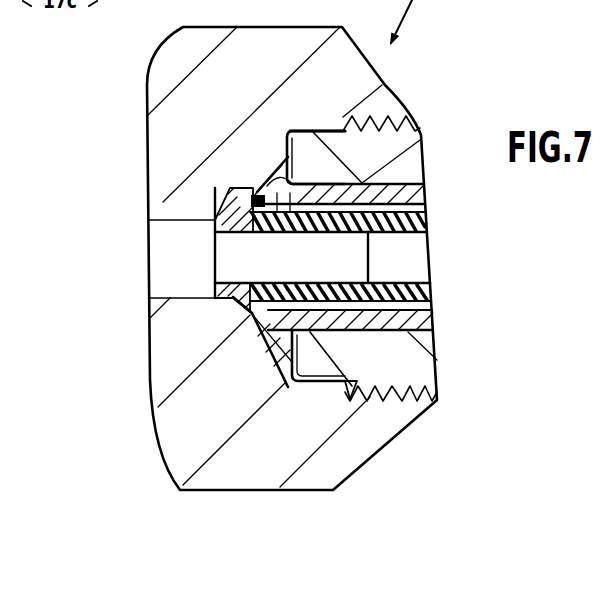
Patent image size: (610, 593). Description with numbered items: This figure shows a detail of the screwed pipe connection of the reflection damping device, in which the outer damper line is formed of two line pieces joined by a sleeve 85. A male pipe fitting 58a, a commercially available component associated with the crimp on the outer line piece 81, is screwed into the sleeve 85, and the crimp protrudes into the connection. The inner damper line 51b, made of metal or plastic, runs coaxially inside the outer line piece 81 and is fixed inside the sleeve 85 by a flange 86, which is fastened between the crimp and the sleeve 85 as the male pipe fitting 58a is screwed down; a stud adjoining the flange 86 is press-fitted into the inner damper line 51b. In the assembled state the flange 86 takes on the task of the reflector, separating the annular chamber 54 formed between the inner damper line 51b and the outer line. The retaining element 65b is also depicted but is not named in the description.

The sleeve 85 is at (362, 447).
The male pipe fitting 58a is at (420, 363).
The collet / retaining ring 65b is at (277, 160).
The line piece 81 is at (422, 195).
The inner damper line 51b is at (425, 225).
The chamber 54 is at (421, 300).
The flange 86 is at (232, 313).